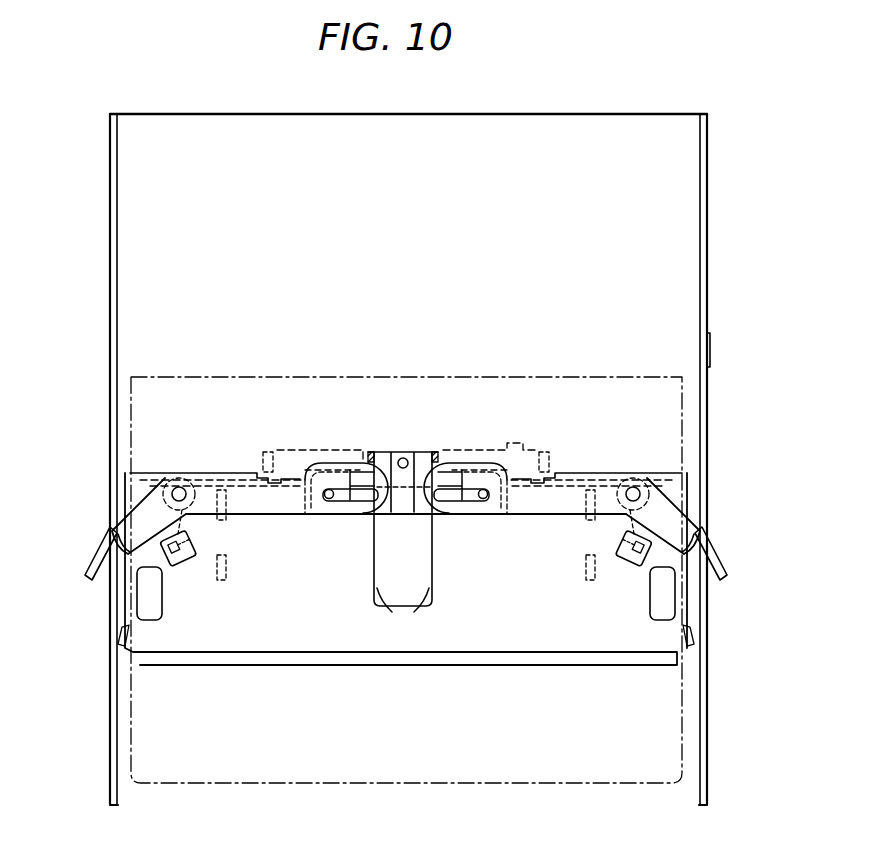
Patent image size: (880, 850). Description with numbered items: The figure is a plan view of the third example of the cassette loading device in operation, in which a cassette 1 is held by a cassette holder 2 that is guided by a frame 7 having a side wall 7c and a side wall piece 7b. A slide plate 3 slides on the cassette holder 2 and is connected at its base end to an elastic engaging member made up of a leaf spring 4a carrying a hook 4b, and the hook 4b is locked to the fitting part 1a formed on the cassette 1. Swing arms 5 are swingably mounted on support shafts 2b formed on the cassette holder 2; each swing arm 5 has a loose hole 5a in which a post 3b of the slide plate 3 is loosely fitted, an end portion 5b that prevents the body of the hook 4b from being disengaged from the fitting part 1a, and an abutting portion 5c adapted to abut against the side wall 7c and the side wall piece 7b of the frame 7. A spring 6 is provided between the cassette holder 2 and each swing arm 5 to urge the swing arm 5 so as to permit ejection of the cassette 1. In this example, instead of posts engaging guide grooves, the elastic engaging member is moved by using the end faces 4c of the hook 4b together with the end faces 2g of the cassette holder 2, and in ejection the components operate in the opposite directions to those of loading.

The cassette 1 is at (228, 758).
The fitting part 1a is at (446, 455).
The cassette holder 2 is at (647, 637).
The support shafts 2b is at (163, 478).
The end faces 2g is at (392, 612).
The slide plate 3 is at (380, 514).
The posts 3b is at (326, 500).
The leaf spring 4a is at (405, 514).
The hook 4b is at (389, 456).
The end faces 4c is at (369, 456).
The swing arms 5 is at (664, 503).
The loose holes 5a is at (348, 503).
The end portion 5b is at (340, 466).
The abutting portion 5c is at (125, 531).
The spring 6 is at (172, 562).
The frame 7 is at (708, 255).
The side wall piece 7b is at (96, 572).
The side wall 7c is at (118, 284).